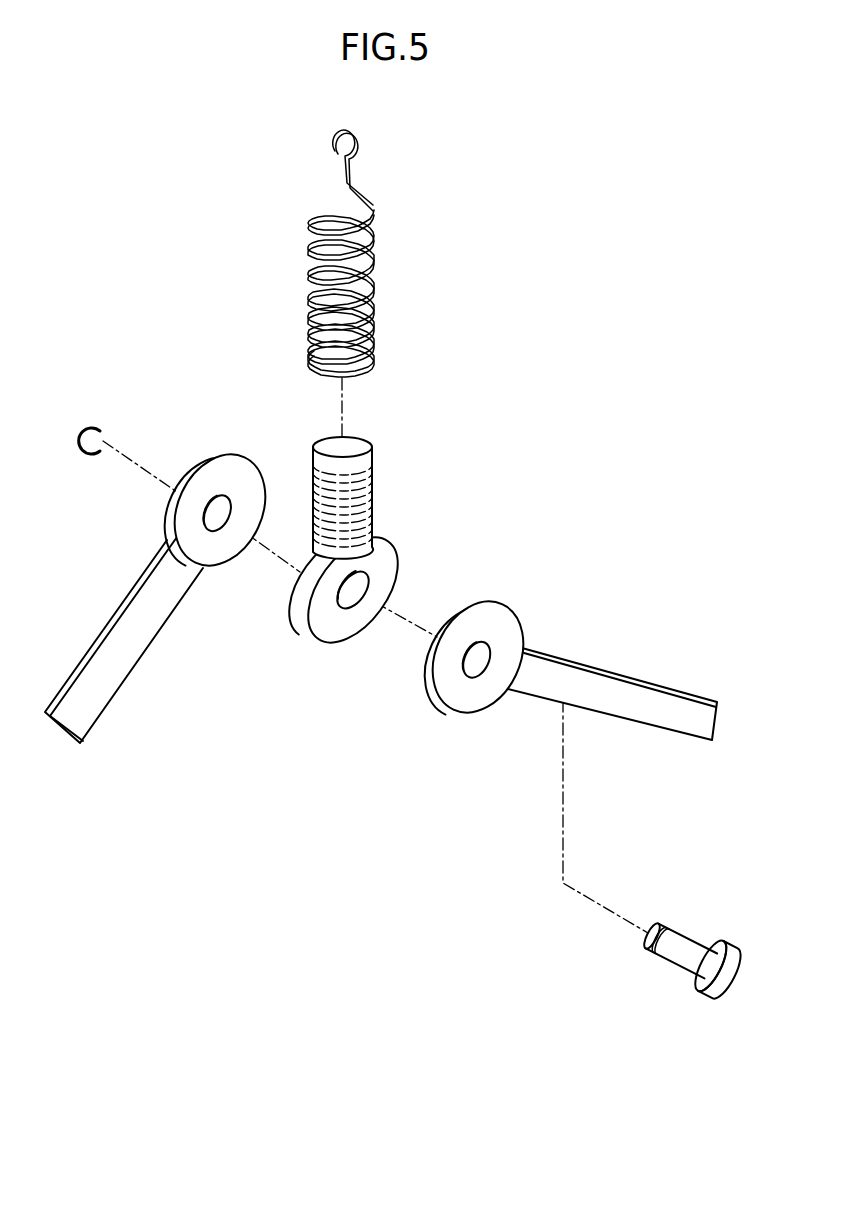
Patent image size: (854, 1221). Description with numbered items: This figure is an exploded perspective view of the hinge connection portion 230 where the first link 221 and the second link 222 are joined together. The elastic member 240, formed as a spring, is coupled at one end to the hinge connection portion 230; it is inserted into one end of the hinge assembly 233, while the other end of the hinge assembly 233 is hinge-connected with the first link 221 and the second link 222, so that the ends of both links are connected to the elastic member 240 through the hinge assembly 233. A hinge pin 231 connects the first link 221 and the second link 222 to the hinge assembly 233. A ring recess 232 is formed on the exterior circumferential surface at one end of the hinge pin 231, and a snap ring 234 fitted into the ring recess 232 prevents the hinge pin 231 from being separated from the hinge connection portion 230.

The hinge connection portion 230 is at (420, 203).
The elastic member 240 is at (374, 302).
The hinge assembly 233 is at (381, 560).
The hinge pin 231 is at (703, 982).
The ring recess 232 is at (667, 921).
The snap ring 234 is at (88, 426).
The first link 221 is at (137, 620).
The second link 222 is at (615, 688).